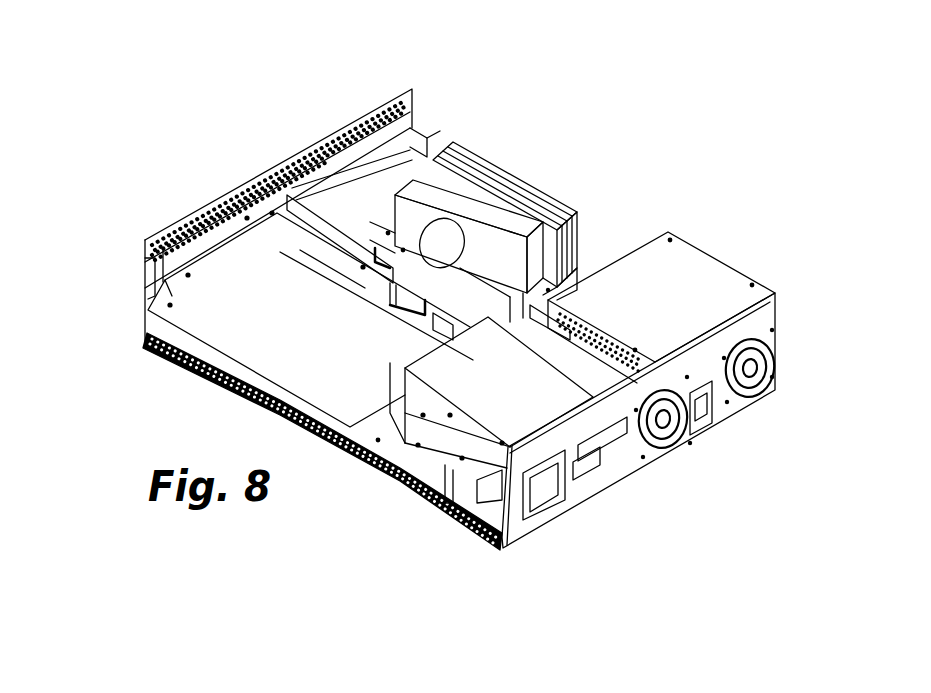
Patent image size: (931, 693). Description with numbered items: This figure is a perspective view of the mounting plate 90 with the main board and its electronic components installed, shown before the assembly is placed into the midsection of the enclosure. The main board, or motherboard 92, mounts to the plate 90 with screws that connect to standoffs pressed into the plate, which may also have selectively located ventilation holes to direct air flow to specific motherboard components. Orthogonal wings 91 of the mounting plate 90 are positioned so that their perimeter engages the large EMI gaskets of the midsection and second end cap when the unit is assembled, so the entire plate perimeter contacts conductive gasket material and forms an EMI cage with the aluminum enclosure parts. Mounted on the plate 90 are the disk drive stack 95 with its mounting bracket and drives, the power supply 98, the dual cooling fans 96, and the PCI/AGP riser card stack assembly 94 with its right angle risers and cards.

The mounting plate 90 is at (202, 377).
The orthogonal wings 91 is at (415, 100).
The main board 92 is at (535, 293).
The PCI/AGP riser card stack assembly 94 is at (258, 293).
The disk drive stack 95 is at (497, 388).
The dual cooling fans 96 is at (690, 440).
The power supply 98 is at (692, 282).